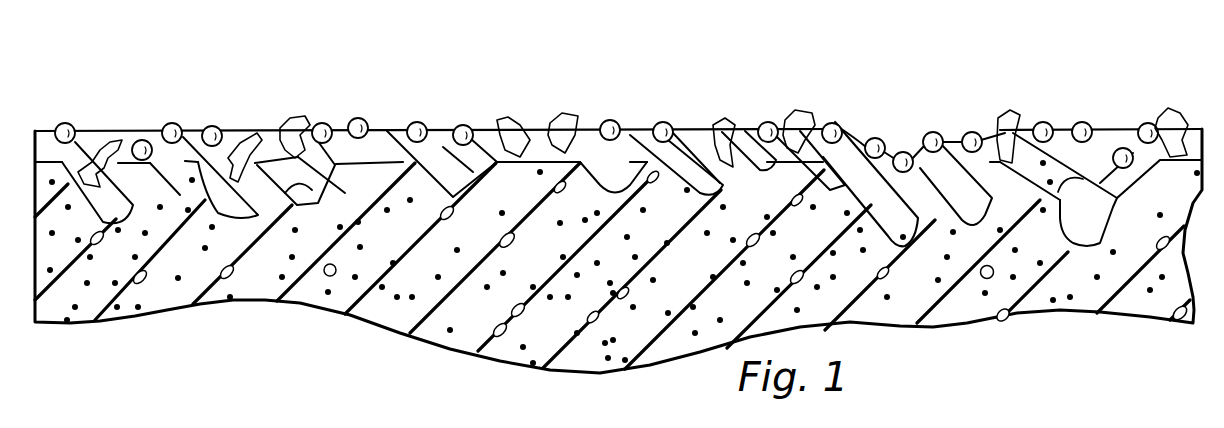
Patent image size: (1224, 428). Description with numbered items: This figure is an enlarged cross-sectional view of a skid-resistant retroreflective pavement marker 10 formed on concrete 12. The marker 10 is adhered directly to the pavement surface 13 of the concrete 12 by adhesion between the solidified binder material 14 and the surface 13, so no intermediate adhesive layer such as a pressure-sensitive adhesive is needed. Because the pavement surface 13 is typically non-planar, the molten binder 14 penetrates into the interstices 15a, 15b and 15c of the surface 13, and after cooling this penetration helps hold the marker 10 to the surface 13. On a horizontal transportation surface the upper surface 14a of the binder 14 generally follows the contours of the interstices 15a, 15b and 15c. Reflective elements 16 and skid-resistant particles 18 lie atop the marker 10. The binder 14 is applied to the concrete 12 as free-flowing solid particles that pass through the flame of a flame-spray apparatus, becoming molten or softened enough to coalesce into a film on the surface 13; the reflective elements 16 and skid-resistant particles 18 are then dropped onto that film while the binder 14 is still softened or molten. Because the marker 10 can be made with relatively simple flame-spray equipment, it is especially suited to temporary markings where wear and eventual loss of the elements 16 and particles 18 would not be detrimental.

The retroreflective pavement marker 10 is at (392, 84).
The concrete 12 is at (158, 296).
The pavement surface 13 is at (532, 160).
The binder material 14 is at (690, 143).
The upper surface of binder 14a is at (852, 122).
The interstice 15a is at (270, 213).
The interstice 15b is at (620, 188).
The interstice 15c is at (1065, 240).
The reflective elements 16 is at (209, 122).
The skid-resistant particles 18 is at (297, 138).